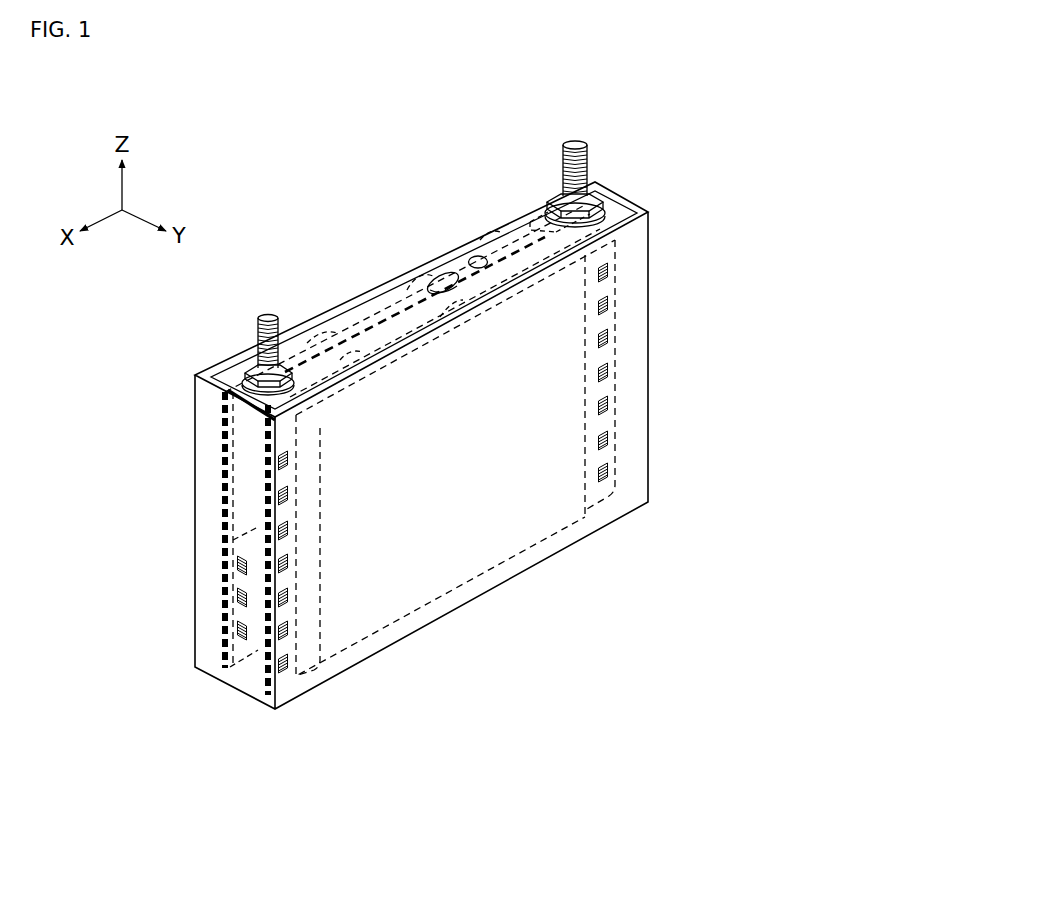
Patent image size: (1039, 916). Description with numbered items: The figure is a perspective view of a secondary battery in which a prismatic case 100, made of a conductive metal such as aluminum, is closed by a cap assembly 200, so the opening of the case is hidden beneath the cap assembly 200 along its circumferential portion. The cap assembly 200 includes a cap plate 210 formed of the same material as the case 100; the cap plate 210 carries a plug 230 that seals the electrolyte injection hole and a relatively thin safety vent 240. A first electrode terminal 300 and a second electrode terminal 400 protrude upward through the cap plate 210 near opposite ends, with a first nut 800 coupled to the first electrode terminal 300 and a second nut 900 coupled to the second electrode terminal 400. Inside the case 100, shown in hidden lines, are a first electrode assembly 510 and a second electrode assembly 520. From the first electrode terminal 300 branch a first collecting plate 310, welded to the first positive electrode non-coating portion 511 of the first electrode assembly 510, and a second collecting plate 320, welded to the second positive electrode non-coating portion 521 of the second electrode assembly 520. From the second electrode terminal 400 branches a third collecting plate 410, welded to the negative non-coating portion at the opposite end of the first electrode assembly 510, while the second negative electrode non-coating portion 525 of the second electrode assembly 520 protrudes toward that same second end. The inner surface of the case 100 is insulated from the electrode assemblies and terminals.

The case 100 is at (650, 372).
The cap assembly 200 is at (378, 282).
The cap plate 210 is at (332, 313).
The plug 230 is at (478, 256).
The safety vent 240 is at (440, 280).
The first electrode terminal 300 is at (252, 315).
The first collecting plate 310 is at (237, 467).
The second collecting plate 320 is at (265, 537).
The second electrode terminal 400 is at (565, 141).
The third collecting plate 410 is at (542, 212).
The first electrode assembly 510 is at (257, 662).
The first positive electrode non-coating portion 511 is at (224, 669).
The second electrode assembly 520 is at (305, 684).
The second positive electrode non-coating portion 521 is at (265, 697).
The second negative electrode non-coating portion 525 is at (616, 436).
The first nut 800 is at (258, 386).
The second nut 900 is at (553, 228).